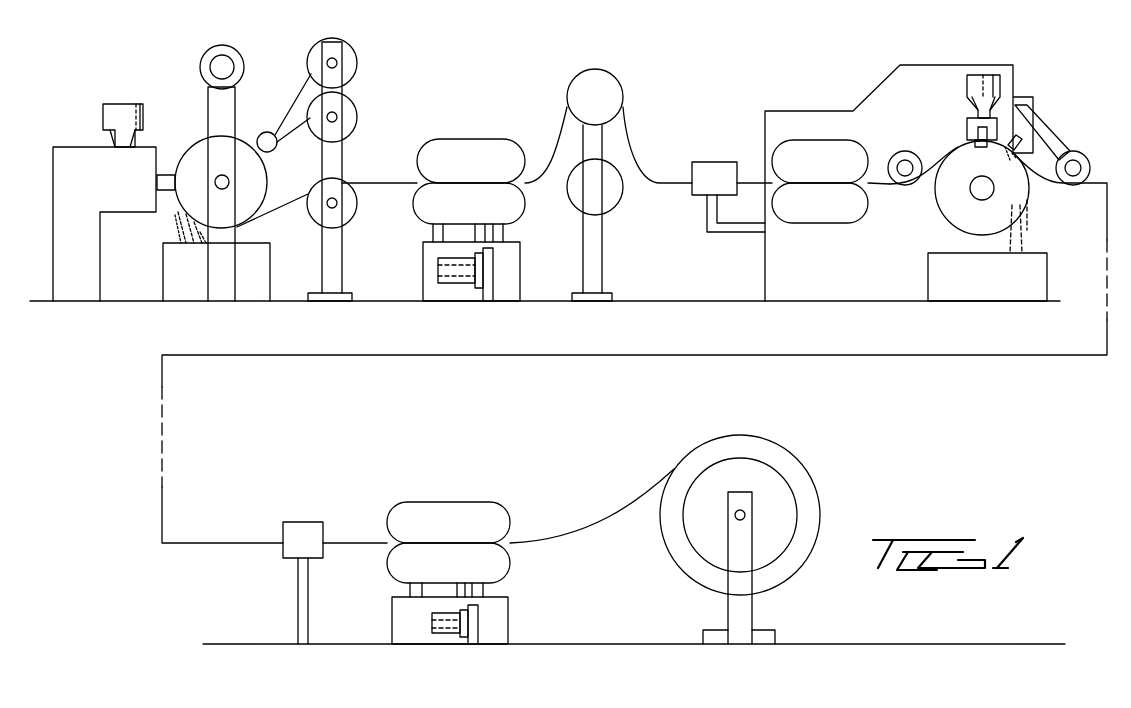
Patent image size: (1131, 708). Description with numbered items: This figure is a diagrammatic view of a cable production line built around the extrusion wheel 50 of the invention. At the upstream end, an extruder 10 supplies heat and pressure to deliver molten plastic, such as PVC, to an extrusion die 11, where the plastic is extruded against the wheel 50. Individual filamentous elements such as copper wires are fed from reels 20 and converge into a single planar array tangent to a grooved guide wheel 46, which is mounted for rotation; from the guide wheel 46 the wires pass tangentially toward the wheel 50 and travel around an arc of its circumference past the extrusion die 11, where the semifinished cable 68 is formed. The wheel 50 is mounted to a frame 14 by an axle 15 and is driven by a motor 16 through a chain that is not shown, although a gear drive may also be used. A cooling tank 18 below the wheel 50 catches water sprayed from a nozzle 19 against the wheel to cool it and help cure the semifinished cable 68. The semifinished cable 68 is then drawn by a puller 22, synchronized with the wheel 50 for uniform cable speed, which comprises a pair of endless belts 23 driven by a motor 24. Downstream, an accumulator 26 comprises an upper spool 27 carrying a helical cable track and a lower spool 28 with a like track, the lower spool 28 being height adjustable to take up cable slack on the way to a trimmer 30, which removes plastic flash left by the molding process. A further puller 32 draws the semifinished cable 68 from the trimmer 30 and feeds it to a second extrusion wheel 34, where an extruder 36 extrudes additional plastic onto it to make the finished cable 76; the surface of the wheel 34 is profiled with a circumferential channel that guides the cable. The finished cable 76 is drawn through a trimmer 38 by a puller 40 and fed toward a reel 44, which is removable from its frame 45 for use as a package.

The extruder 10 is at (80, 162).
The extrusion die 11 is at (164, 175).
The frame 14 is at (228, 127).
The axle 15 is at (230, 180).
The motor 16 is at (240, 60).
The cooling tank 18 is at (175, 273).
The nozzle 19 is at (182, 233).
The reels 20 is at (355, 88).
The puller 22 is at (482, 138).
The endless belts 23 is at (423, 200).
The motor 24 is at (442, 268).
The accumulator 26 is at (628, 104).
The upper spool 27 is at (612, 88).
The lower spool 28 is at (600, 195).
The trimmer 30 is at (710, 167).
The puller 32 is at (873, 158).
The second extrusion wheel 34 is at (960, 220).
The extruder 36 is at (965, 135).
The trimmer 38 is at (315, 530).
The puller 40 is at (523, 523).
The reel 44 is at (682, 550).
The frame 45 is at (742, 608).
The grooved guide wheel 46 is at (271, 133).
The extrusion wheel 50 is at (197, 155).
The semifinished cable 68 is at (292, 192).
The finished cable 76 is at (608, 530).